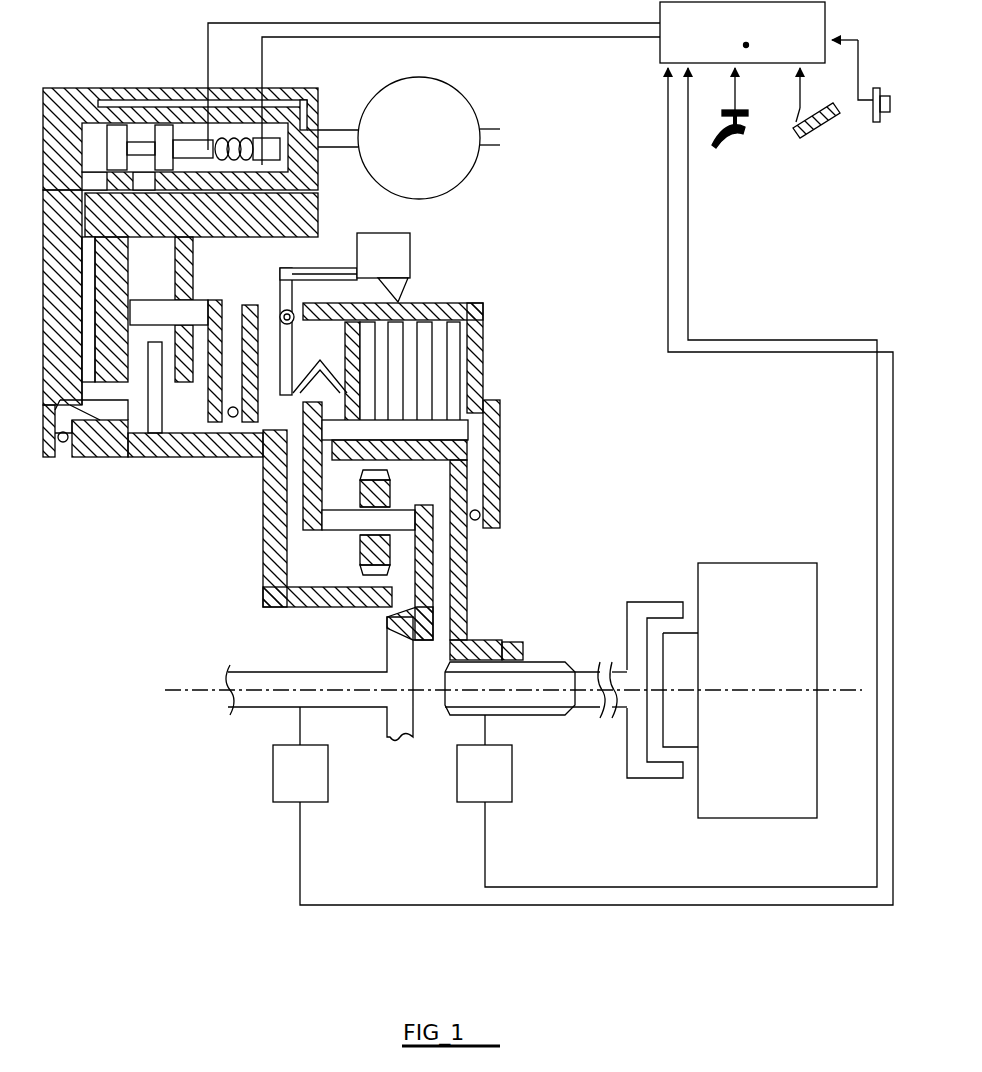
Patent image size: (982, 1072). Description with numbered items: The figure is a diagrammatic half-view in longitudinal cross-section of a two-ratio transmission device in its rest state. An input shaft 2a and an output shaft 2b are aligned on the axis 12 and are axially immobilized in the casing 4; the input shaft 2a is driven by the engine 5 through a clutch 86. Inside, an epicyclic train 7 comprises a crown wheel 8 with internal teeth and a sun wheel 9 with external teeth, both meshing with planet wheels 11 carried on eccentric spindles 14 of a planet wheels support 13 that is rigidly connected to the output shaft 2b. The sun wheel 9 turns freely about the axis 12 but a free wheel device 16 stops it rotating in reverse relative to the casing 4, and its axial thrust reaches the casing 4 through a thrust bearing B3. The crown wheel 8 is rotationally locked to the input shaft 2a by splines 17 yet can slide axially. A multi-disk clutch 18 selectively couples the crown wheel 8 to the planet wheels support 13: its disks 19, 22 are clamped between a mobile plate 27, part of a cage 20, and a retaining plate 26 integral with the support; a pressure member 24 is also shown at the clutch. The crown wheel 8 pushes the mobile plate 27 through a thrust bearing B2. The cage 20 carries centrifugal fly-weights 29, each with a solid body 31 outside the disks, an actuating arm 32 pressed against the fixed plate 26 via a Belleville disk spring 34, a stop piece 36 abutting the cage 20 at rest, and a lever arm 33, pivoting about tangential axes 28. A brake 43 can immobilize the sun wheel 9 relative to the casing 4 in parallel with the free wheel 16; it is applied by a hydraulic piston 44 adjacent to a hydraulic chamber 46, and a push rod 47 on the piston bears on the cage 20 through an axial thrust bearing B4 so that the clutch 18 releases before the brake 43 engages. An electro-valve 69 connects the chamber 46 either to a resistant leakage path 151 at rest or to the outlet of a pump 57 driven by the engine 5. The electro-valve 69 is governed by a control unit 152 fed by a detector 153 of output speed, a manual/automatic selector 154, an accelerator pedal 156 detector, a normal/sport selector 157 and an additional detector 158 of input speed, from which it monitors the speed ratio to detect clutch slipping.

The input shaft 2a is at (590, 708).
The output shaft 2b is at (272, 672).
The casing 4 is at (65, 342).
The engine 5 is at (747, 562).
The epicyclic train 7 is at (316, 548).
The crown wheel 8 is at (335, 470).
The sun wheel 9 is at (390, 560).
The planet wheels 11 is at (390, 548).
The axis 12 is at (855, 687).
The planet wheels support 13 is at (420, 600).
The eccentric spindles 14 is at (348, 522).
The free wheel device 16 is at (97, 432).
The splines 17 is at (507, 660).
The multi-disk clutch 18 is at (507, 317).
The disks 19 is at (423, 365).
The cage 20 is at (447, 303).
The disks 22 is at (440, 376).
The pressure plate 24 is at (362, 310).
The retaining plate 26 is at (462, 322).
The mobile plate 27 is at (480, 332).
The tangential axes 28 is at (288, 310).
The centrifugal fly-weights 29 is at (387, 230).
The solid body 31 is at (413, 238).
The actuating arm 32 is at (277, 370).
The lever arm 33 is at (290, 268).
The Belleville disk spring 34 is at (320, 378).
The stop piece 36 is at (410, 304).
The brake 43 is at (170, 400).
The hydraulic piston 44 is at (83, 282).
The hydraulic chamber 46 is at (87, 253).
The push rod 47 is at (195, 312).
The pump 57 is at (481, 114).
The electro-valve 69 is at (73, 133).
The clutch 86 is at (649, 596).
The leakage path 151 is at (255, 195).
The control unit 152 is at (540, 83).
The detector 153 is at (273, 775).
The manual/automatic selector 154 is at (734, 147).
The accelerator pedal 156 is at (823, 142).
The normal/sport selector 157 is at (874, 128).
The additional detector 158 is at (513, 777).
The thrust bearing B2 is at (487, 505).
The thrust bearing B3 is at (62, 445).
The axial thrust bearing B4 is at (231, 420).